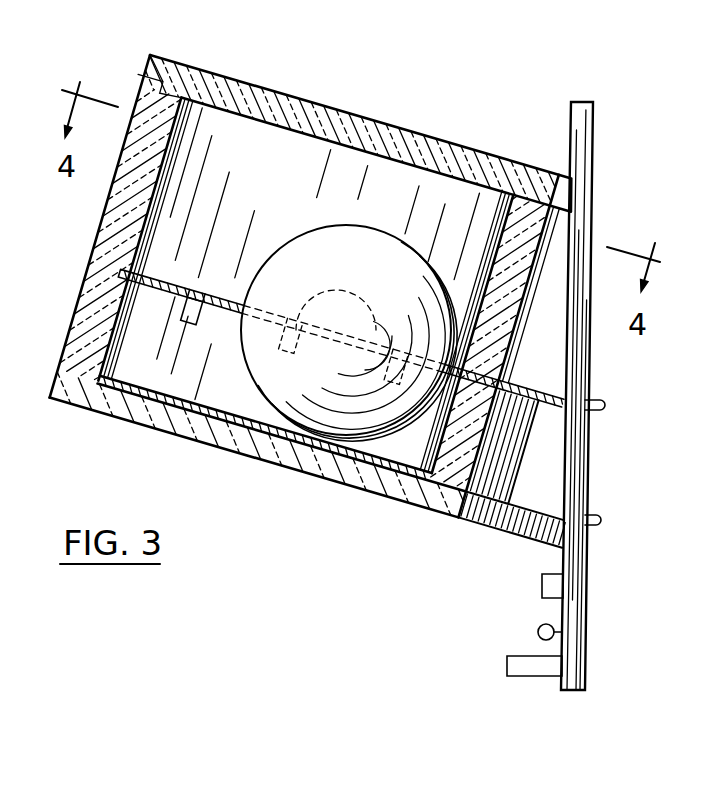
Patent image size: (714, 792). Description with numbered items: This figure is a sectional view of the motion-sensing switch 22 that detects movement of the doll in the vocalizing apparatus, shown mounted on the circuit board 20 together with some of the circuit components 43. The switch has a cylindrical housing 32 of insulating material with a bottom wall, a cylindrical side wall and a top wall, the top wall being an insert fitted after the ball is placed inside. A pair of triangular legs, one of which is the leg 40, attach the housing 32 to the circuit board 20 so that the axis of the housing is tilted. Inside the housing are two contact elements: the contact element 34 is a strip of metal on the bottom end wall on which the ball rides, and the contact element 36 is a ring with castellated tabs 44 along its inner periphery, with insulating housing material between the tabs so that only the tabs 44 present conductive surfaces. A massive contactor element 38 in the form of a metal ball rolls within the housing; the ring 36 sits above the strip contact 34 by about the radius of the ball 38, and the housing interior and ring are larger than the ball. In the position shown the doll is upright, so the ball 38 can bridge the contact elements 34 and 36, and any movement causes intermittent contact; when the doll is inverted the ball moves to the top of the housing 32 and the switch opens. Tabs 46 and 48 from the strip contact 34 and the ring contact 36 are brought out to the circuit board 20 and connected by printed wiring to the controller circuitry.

The circuit board 20 is at (598, 470).
The switch 22 is at (310, 102).
The housing 32 is at (140, 92).
The contact element 34 is at (287, 432).
The contact element 36 is at (130, 275).
The contactor element 38 is at (362, 232).
The triangular leg 40 is at (560, 226).
The components 43 is at (507, 658).
The castellated tabs 44 is at (192, 296).
The tab 46 is at (522, 485).
The tab 48 is at (602, 405).